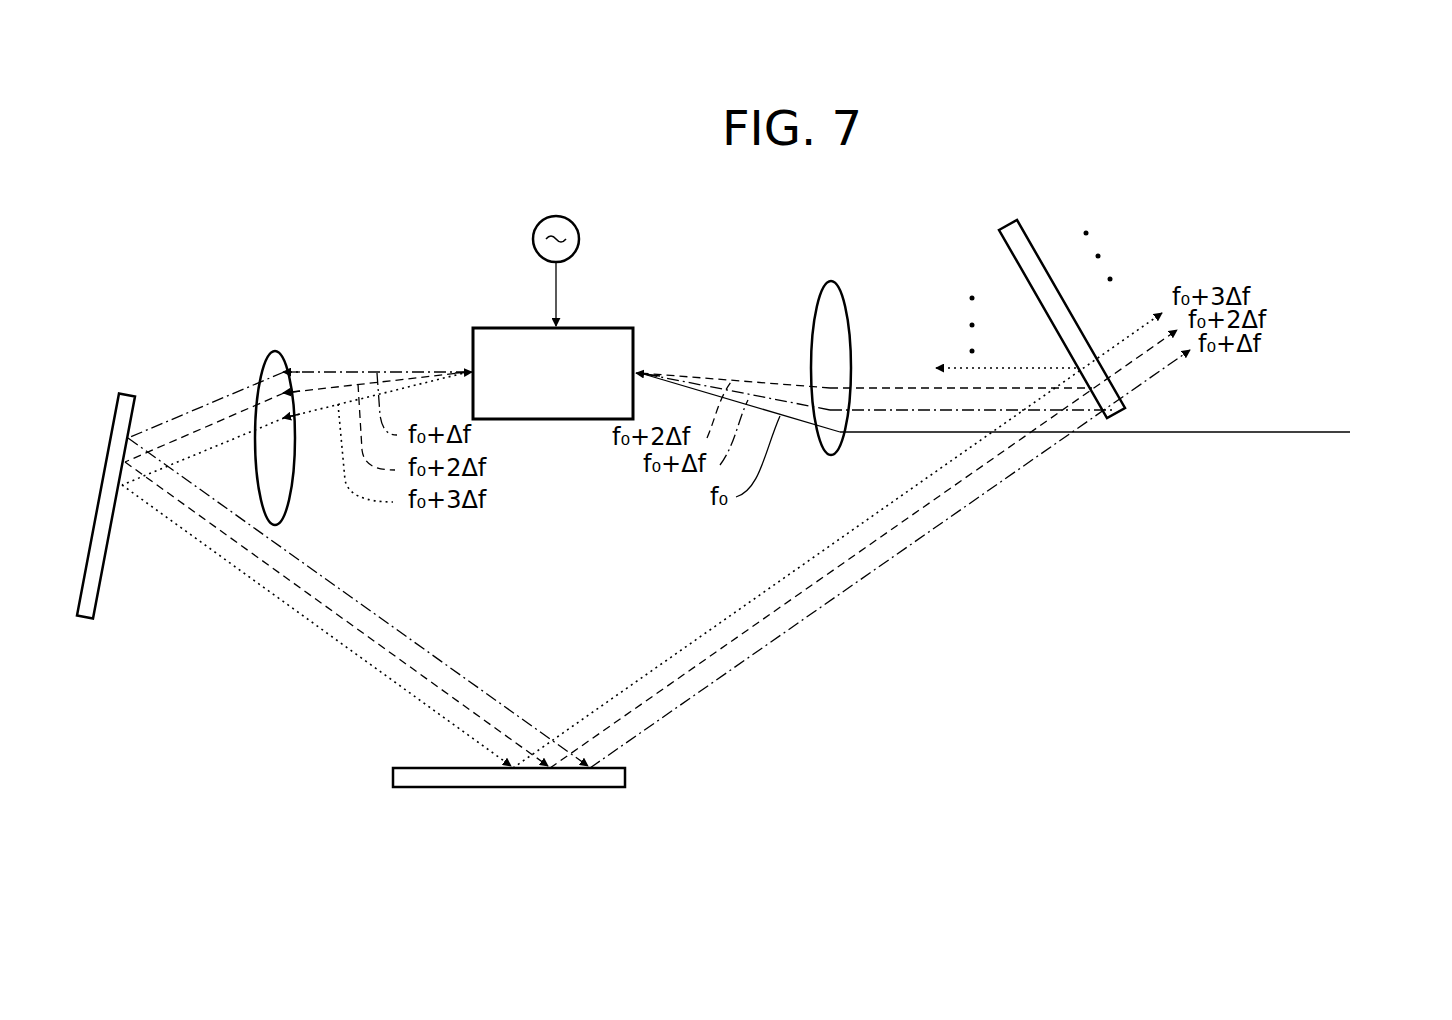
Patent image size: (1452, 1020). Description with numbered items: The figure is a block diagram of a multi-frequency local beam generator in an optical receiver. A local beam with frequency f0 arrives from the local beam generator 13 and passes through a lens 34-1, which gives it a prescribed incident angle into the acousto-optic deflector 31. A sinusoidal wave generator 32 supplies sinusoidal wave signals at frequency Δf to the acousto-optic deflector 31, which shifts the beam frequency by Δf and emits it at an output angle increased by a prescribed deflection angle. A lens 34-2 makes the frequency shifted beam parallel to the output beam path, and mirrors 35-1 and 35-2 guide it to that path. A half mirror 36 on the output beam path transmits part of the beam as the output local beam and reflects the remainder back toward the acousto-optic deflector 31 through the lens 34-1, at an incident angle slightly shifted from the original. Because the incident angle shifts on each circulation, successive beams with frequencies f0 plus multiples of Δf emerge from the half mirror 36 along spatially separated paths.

The acousto-optic deflector 31 is at (490, 328).
The sinusoidal wave generator 32 is at (578, 231).
The lens 34-1 is at (820, 292).
The lens 34-2 is at (263, 360).
The mirror 35-1 is at (116, 405).
The mirror 35-2 is at (393, 770).
The half mirror 36 is at (1002, 245).
The local beam generator 13 is at (1135, 417).